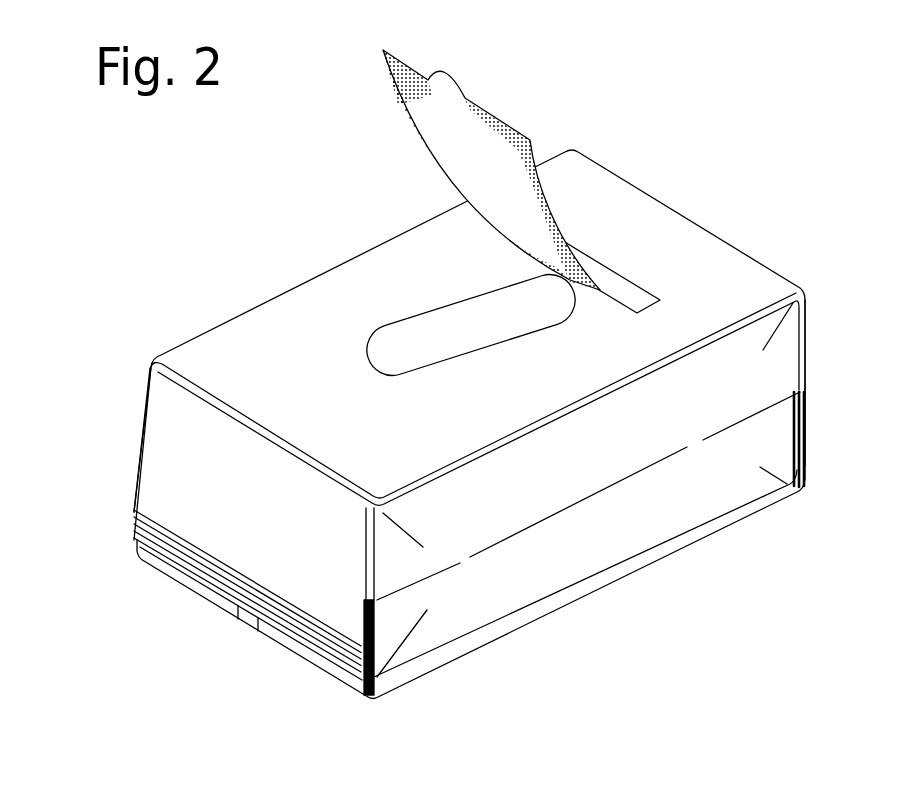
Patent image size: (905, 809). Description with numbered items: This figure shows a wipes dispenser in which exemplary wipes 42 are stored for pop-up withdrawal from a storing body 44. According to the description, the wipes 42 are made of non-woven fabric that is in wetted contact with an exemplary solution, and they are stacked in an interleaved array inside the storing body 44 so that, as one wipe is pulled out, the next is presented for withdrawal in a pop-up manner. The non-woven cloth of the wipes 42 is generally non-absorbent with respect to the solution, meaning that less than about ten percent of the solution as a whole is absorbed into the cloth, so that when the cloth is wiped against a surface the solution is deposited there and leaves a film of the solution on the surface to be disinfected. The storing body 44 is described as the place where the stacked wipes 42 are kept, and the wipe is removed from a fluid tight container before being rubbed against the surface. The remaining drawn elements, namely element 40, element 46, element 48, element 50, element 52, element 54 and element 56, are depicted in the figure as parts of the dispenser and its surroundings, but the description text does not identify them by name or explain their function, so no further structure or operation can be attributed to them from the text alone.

The wipes dispenser container 40 is at (550, 617).
The wipes 42 is at (393, 318).
The storing body 44 is at (575, 177).
The closure flap 46 is at (403, 350).
The wipe 48 is at (400, 64).
The top panel 50 is at (640, 224).
The side edge 52 is at (193, 368).
The bottom panel 54 is at (760, 510).
The end panel 56 is at (187, 490).